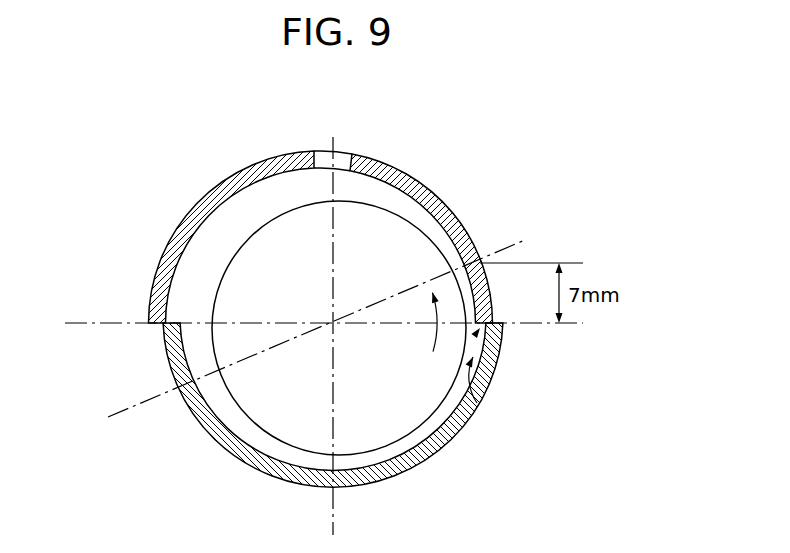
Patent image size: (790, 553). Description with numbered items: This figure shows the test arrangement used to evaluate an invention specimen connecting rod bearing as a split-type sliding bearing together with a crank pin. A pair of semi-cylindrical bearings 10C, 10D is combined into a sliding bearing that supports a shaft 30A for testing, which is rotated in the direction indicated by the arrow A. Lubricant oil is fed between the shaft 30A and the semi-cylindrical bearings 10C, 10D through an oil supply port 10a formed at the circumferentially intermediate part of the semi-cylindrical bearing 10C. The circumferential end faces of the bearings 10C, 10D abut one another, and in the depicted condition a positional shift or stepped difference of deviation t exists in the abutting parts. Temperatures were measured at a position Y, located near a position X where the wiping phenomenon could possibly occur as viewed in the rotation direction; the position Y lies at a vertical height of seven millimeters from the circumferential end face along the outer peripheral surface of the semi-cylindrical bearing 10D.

The oil supply port 10a is at (343, 158).
The semi-cylindrical bearing 10C is at (190, 218).
The semi-cylindrical bearing 10D is at (425, 472).
The shaft for testing 30A is at (368, 227).
The position where wiping phenomenon could occur X is at (477, 403).
The temperature measurement position Y is at (482, 262).
The arrow indicating rotation direction A is at (435, 338).
The deviation between abutting parts t is at (480, 328).